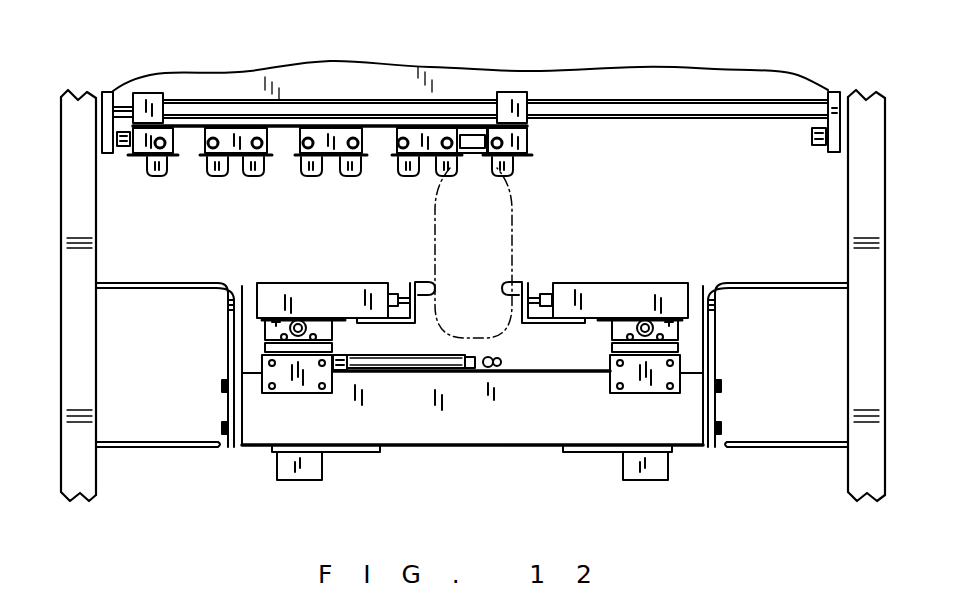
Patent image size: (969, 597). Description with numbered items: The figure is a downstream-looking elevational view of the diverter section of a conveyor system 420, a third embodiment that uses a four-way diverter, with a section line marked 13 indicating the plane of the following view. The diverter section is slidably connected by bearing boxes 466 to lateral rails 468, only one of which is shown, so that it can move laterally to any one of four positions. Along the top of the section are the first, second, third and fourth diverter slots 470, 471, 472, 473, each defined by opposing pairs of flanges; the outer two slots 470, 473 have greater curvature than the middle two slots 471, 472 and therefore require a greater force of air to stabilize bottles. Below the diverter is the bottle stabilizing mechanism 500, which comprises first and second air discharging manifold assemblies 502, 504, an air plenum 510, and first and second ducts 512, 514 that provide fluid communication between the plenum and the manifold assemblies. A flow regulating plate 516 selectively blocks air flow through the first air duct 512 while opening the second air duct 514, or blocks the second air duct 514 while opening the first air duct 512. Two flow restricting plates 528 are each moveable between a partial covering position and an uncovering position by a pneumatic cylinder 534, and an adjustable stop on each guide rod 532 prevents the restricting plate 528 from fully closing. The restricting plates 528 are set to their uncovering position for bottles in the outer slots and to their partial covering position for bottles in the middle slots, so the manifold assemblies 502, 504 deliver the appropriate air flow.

The conveyor system 420 is at (48, 248).
The bearing boxes 466 is at (150, 103).
The lateral rails 468 is at (357, 100).
The first diverter slot 470 is at (473, 132).
The second diverter slot 471 is at (375, 142).
The third diverter slot 472 is at (283, 142).
The fourth diverter slot 473 is at (187, 142).
The bottle stabilizing mechanism 500 is at (304, 260).
The first air discharging manifold assembly 502 is at (330, 281).
The second air discharging manifold assembly 504 is at (658, 281).
The air plenum 510 is at (427, 434).
The first air duct 512 is at (335, 328).
The second air duct 514 is at (612, 340).
The flow regulating plate 516 is at (521, 362).
The flow restricting plate 528 is at (273, 324).
The guide rod 532 is at (294, 332).
The pneumatic cylinder 534 is at (302, 382).
The section line for FIG. 13 is at (254, 323).